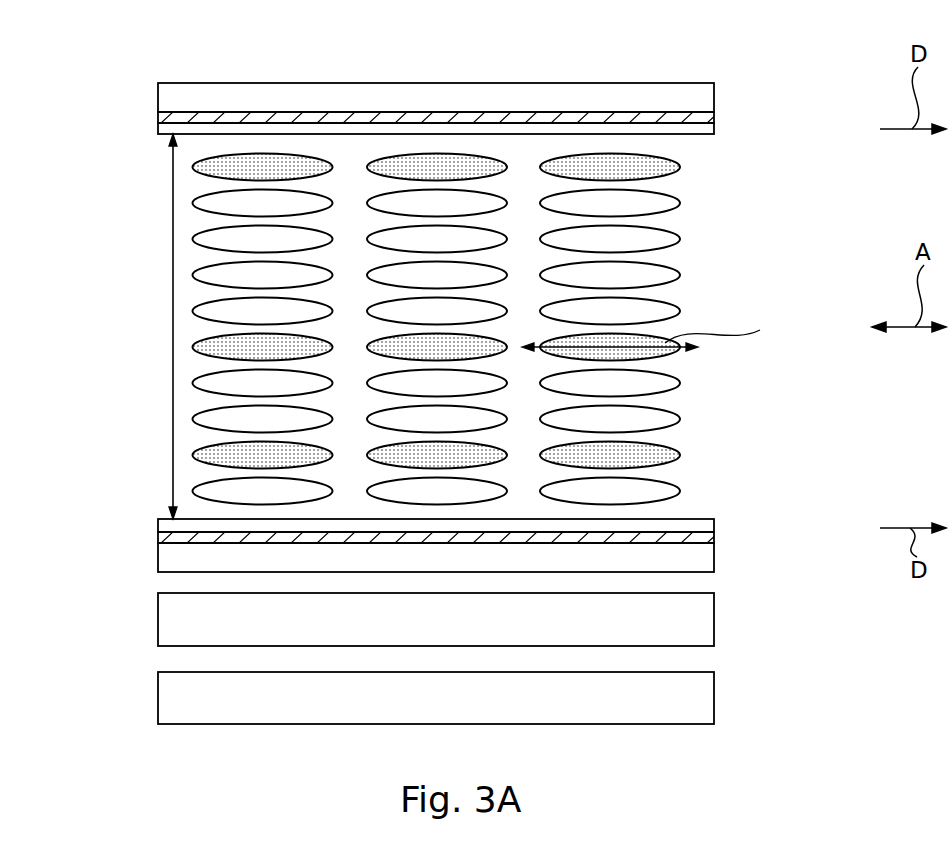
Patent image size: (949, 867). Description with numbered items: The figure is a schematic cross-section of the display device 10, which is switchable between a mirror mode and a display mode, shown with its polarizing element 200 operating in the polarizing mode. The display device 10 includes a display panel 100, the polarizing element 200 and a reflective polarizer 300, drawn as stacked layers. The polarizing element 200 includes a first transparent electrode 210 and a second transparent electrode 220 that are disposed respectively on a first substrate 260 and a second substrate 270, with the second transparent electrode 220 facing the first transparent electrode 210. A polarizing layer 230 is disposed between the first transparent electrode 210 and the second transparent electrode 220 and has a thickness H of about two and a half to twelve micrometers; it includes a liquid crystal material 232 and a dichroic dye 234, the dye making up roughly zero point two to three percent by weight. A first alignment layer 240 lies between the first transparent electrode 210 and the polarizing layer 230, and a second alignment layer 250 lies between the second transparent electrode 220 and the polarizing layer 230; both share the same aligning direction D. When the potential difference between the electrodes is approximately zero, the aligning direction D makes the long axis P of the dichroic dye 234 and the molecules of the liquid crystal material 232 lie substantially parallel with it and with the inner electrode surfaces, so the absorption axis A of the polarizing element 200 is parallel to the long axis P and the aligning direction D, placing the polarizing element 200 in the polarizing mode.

The display device 10 is at (134, 61).
The display panel 100 is at (158, 697).
The polarizing element 200 is at (140, 83).
The first transparent electrode 210 is at (714, 118).
The second transparent electrode 220 is at (714, 536).
The polarizing layer 230 is at (533, 329).
The liquid crystal material 232 is at (665, 237).
The dichroic dye 234 is at (672, 351).
The first alignment layer 240 is at (714, 129).
The second alignment layer 250 is at (714, 524).
The first substrate 260 is at (714, 97).
The second substrate 270 is at (714, 558).
The reflective polarizer 300 is at (158, 618).